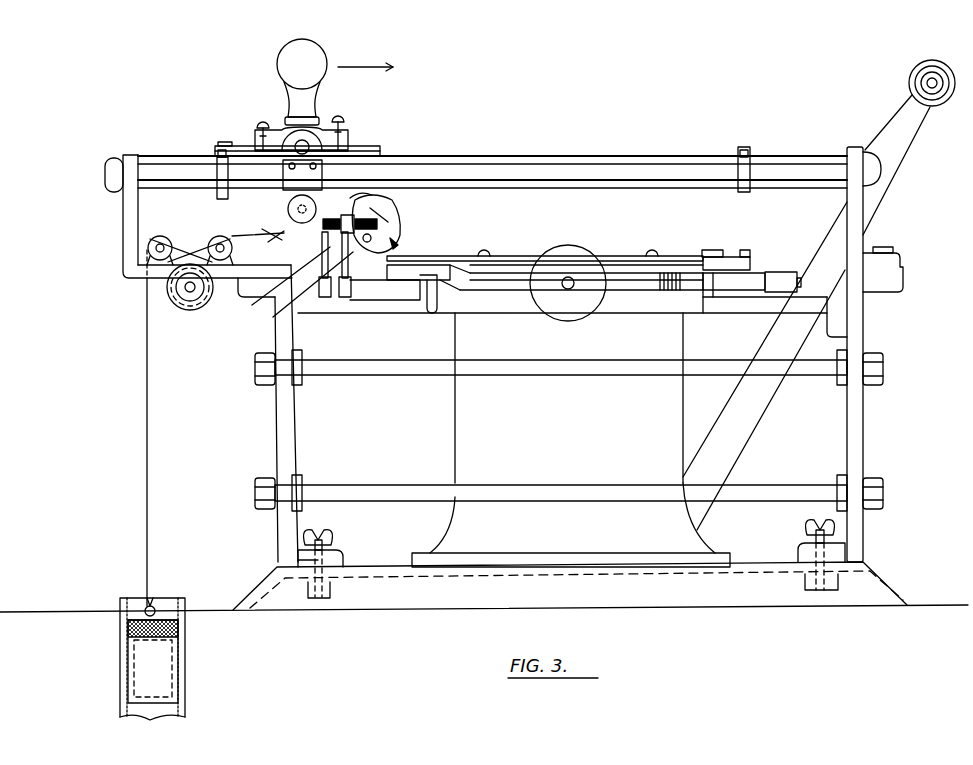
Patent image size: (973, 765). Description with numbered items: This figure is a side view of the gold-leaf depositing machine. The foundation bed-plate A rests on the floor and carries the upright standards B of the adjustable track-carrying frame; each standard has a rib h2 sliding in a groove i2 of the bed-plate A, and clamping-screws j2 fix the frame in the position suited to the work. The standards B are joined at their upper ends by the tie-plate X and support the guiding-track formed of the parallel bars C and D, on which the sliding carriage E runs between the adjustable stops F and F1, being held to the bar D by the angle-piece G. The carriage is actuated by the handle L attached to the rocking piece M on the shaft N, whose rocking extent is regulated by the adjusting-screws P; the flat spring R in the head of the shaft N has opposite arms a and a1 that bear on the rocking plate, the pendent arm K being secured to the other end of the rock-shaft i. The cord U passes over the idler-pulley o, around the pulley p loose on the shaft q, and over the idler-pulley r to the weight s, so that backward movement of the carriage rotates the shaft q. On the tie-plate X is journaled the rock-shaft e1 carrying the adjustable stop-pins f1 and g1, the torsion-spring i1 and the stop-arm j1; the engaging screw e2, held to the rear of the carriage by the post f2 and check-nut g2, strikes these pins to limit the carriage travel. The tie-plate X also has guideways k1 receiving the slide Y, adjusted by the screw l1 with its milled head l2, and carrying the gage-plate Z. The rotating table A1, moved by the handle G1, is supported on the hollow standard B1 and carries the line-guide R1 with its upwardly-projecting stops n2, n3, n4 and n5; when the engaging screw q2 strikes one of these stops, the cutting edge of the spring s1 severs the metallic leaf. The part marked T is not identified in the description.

The foundation bed-plate A is at (460, 610).
The groove i2 is at (312, 582).
The rib h2 is at (312, 573).
The clamping-screw j2 is at (325, 533).
The upright standard B is at (278, 437).
The hollow standard B1 is at (468, 428).
The bar D is at (596, 178).
The bar C is at (558, 160).
The adjustable stop F is at (217, 165).
The adjustable stop F1 is at (748, 150).
The arm of the spring a is at (380, 152).
The arm of the spring a1 is at (223, 156).
The sliding carriage E is at (370, 158).
The flat spring R is at (360, 148).
The rocking piece M is at (326, 132).
The shaft N is at (302, 140).
The adjusting-screws P is at (263, 122).
The handle L is at (284, 68).
The angle-piece G is at (290, 183).
The pendent arm K is at (288, 213).
The idler-pulley r is at (163, 240).
The idler-pulley o is at (222, 236).
The cord U is at (197, 256).
The shaft q is at (189, 290).
The pulley p is at (207, 300).
The stop-pin f1 is at (257, 307).
The stop-pin g1 is at (276, 318).
The engaging screw e2 is at (334, 218).
The stop-arm j1 is at (326, 297).
The stop n3 is at (346, 297).
The cam T is at (396, 214).
The check-nut g2 is at (380, 222).
The spring s1 is at (400, 235).
The engaging screw q2 is at (401, 245).
The rock-shaft i is at (393, 285).
The rock-shaft e1 is at (377, 300).
The guideways k1 is at (412, 305).
The gage-plate Z is at (506, 257).
The slide Y is at (630, 265).
The tie-plate X is at (625, 314).
The stop n2 is at (458, 255).
The milled head l2 is at (578, 248).
The screw l1 is at (564, 290).
The torsion-spring i1 is at (670, 291).
The rotating table A1 is at (712, 262).
The stop n4 is at (712, 250).
The stop n5 is at (746, 250).
The line-guide R1 is at (767, 270).
The post f2 is at (374, 195).
The handle G1 is at (918, 83).
The weight s is at (168, 660).